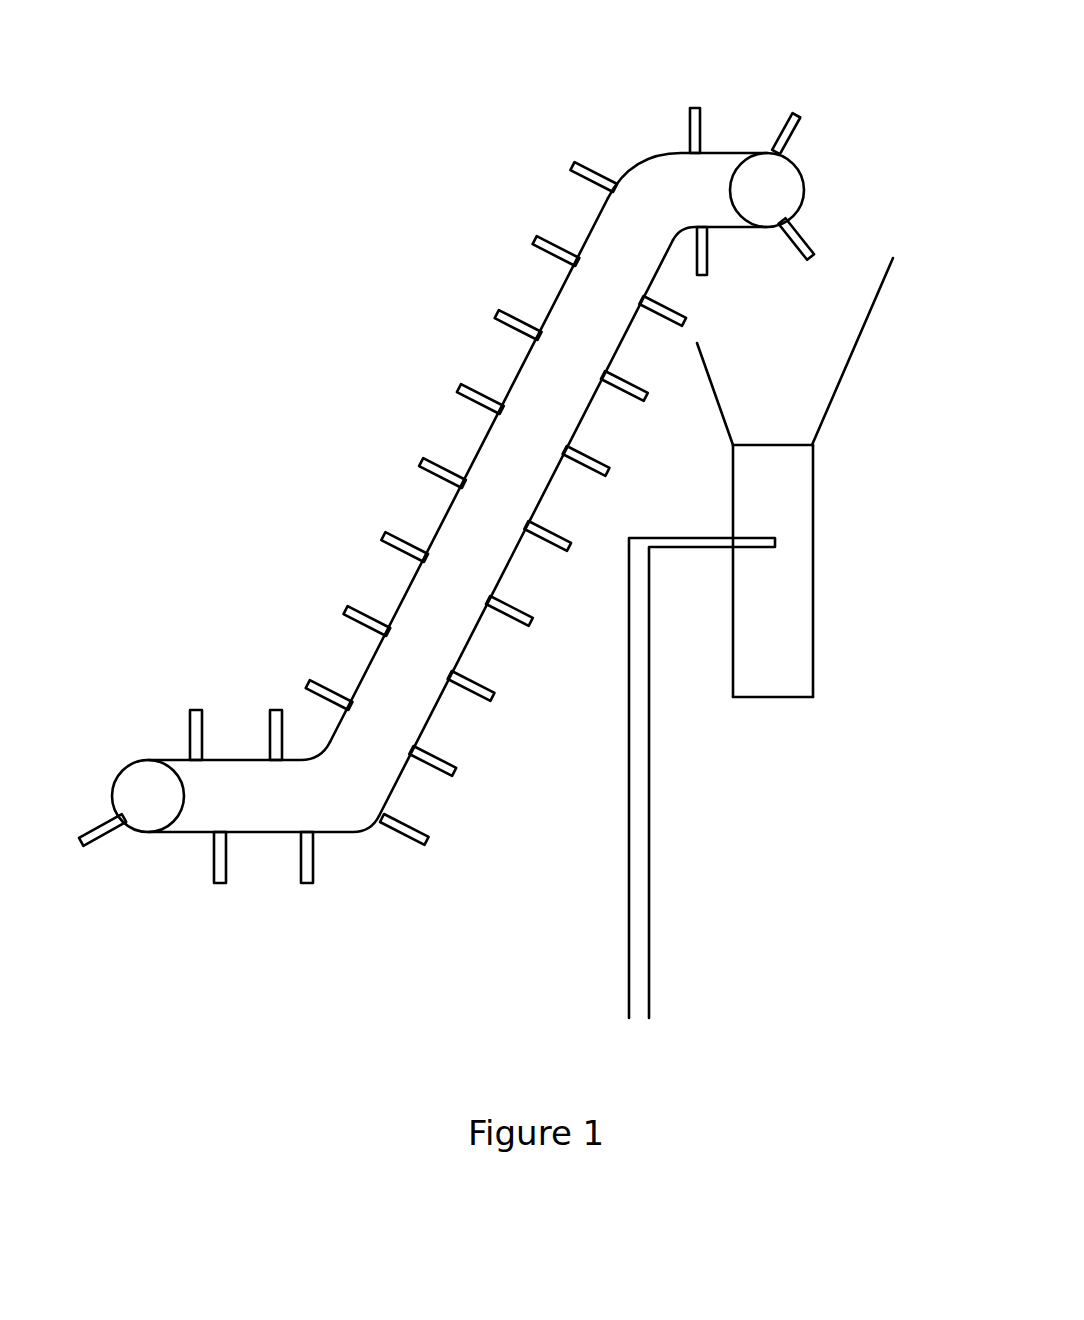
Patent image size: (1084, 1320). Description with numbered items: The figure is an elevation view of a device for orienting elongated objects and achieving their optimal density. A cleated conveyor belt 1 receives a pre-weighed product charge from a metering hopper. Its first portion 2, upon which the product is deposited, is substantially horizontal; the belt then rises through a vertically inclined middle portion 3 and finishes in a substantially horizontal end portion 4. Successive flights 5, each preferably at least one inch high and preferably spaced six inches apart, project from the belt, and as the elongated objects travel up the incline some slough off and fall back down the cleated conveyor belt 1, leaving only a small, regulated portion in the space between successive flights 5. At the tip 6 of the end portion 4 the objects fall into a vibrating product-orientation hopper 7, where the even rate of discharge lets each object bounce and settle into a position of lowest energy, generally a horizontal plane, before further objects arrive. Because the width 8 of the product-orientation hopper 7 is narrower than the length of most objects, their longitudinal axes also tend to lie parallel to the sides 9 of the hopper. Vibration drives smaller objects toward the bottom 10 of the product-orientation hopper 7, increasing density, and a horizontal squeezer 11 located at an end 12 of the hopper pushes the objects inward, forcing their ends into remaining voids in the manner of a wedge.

The cleated conveyor belt 1 is at (486, 455).
The first portion 2 is at (250, 790).
The middle portion 3 is at (493, 525).
The end portion 4 is at (720, 183).
The flight 5 is at (497, 312).
The tip 6 is at (803, 188).
The product-orientation hopper 7 is at (787, 638).
The width 8 is at (785, 445).
The sides 9 is at (733, 512).
The bottom 10 is at (780, 698).
The horizontal squeezer 11 is at (748, 547).
The end 12 is at (839, 622).